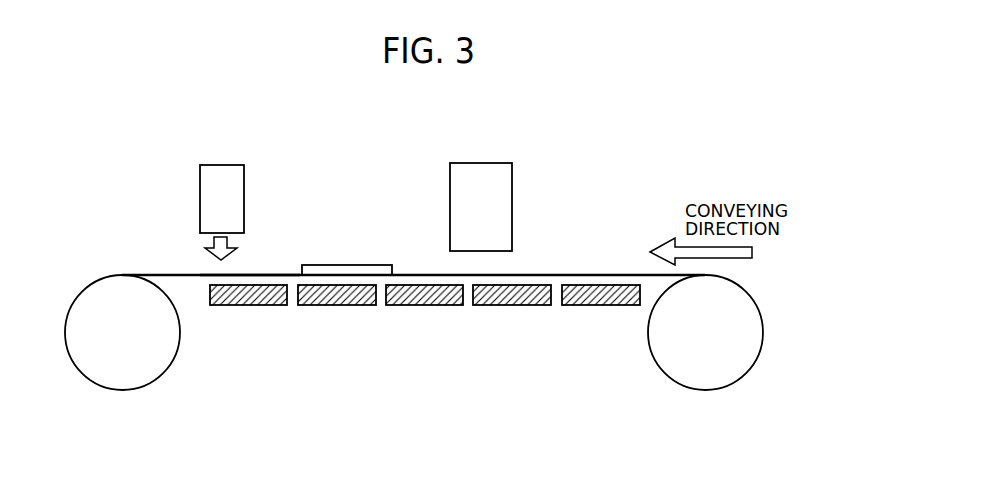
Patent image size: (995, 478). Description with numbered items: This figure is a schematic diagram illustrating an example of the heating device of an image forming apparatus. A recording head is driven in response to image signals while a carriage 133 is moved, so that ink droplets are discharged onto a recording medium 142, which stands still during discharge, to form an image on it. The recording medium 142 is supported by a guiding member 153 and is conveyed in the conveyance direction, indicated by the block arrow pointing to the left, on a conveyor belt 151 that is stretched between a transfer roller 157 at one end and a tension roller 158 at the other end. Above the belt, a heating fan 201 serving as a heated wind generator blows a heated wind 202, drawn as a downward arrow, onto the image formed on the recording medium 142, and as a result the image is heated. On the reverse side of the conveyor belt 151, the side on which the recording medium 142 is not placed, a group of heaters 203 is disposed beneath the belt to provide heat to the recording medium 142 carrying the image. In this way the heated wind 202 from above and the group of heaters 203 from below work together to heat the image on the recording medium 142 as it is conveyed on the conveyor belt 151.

The carriage 133 is at (483, 163).
The recording medium 142 is at (352, 265).
The conveyor belt 151 is at (560, 275).
The guiding member 153 is at (252, 275).
The transfer roller 157 is at (132, 390).
The tension roller 158 is at (717, 390).
The heating fan 201 is at (213, 165).
The heated wind 202 is at (208, 248).
The group of heaters 203 is at (342, 305).